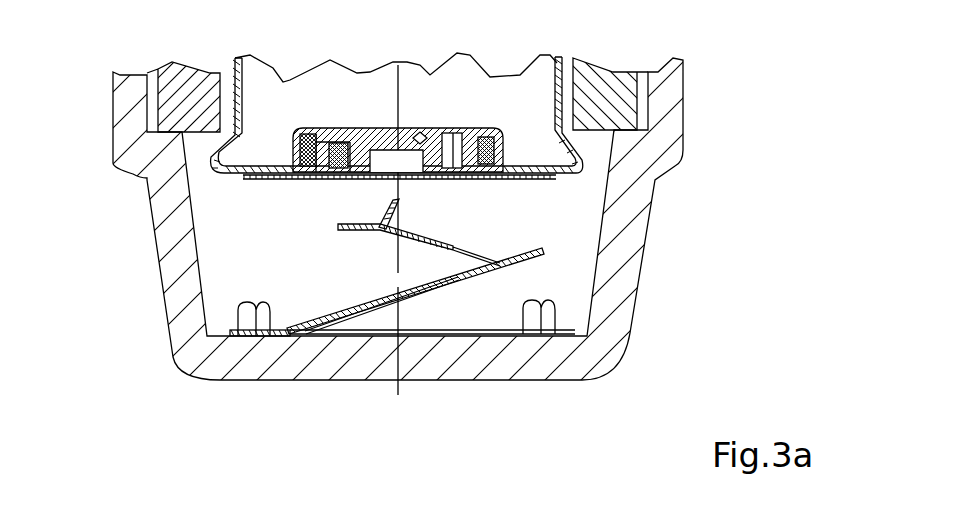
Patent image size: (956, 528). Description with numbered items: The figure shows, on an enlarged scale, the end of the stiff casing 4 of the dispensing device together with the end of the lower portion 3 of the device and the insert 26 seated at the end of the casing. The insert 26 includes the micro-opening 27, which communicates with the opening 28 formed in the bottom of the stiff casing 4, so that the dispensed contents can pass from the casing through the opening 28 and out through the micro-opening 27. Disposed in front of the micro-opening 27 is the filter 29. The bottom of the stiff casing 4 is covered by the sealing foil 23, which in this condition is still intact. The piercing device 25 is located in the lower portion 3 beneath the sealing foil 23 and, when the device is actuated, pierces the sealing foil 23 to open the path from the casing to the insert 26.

The lower portion 3 is at (133, 130).
The stiff casing 4 is at (560, 82).
The sealing foil 23 is at (262, 177).
The piercing device 25 is at (527, 258).
The insert 26 is at (404, 130).
The micro-opening 27 is at (331, 118).
The opening 28 is at (456, 126).
The filter 29 is at (308, 128).